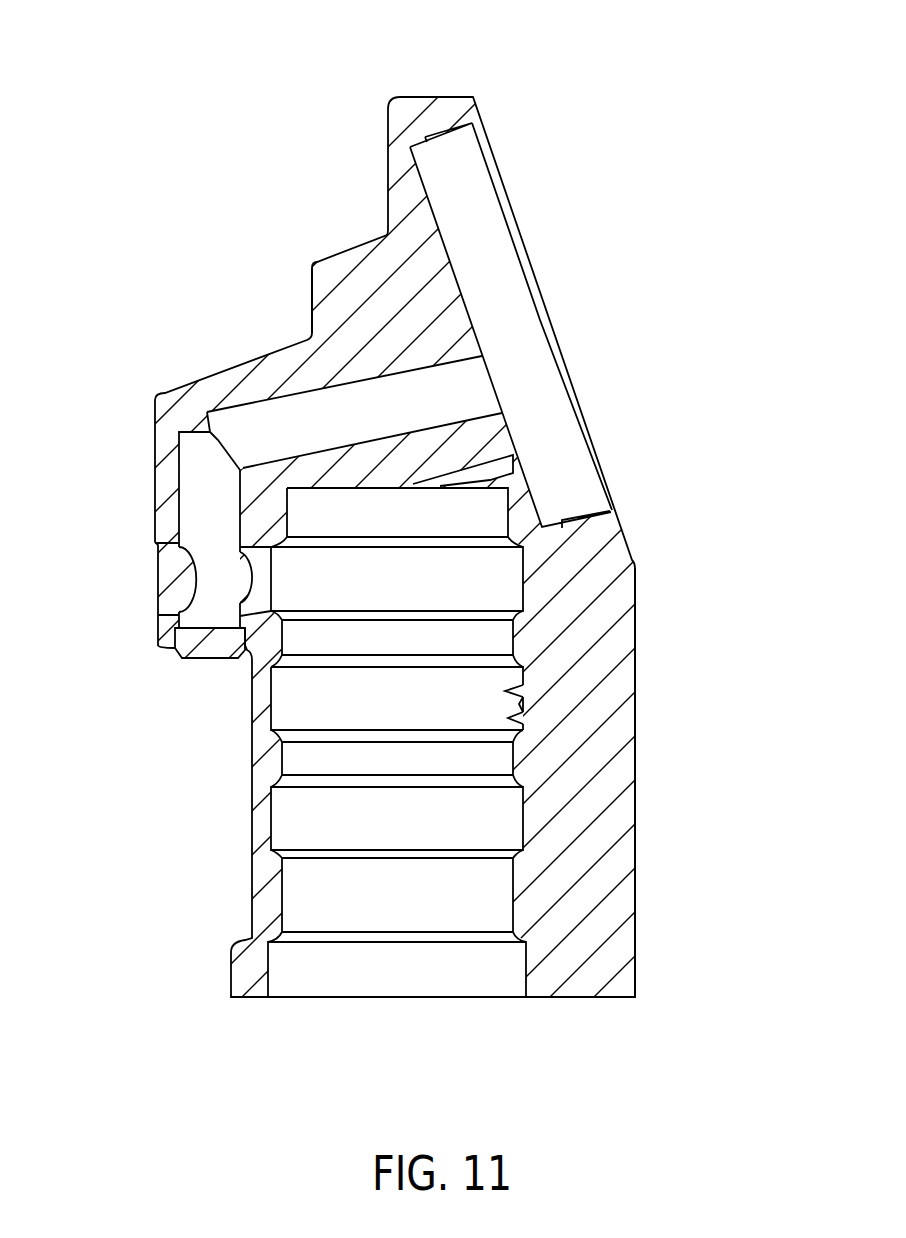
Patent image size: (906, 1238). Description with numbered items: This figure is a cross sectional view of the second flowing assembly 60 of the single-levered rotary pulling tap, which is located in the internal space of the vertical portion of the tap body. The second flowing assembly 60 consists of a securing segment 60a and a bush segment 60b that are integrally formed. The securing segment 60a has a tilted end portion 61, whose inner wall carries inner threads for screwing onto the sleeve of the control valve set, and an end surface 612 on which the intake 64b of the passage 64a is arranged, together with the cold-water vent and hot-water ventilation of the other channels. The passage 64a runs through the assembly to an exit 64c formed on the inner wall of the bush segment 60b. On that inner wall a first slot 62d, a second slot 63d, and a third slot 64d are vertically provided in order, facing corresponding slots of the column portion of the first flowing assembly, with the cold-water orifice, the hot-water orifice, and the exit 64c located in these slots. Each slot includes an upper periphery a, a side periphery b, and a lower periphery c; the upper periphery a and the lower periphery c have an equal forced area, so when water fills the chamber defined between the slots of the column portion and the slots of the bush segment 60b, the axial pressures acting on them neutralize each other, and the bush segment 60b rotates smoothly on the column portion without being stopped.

The second flowing assembly 60 is at (598, 262).
The securing segment 60a is at (307, 283).
The bush segment 60b is at (637, 830).
The tilted end portion 61 is at (432, 97).
The end surface 612 is at (447, 243).
The first slot 62d is at (477, 582).
The second slot 63d is at (317, 697).
The third slot 64d is at (315, 822).
The passage 64a is at (207, 495).
The intake 64b is at (475, 387).
The exit 64c is at (260, 578).
The upper periphery a is at (523, 685).
The side periphery b is at (512, 718).
The lower periphery c is at (508, 692).